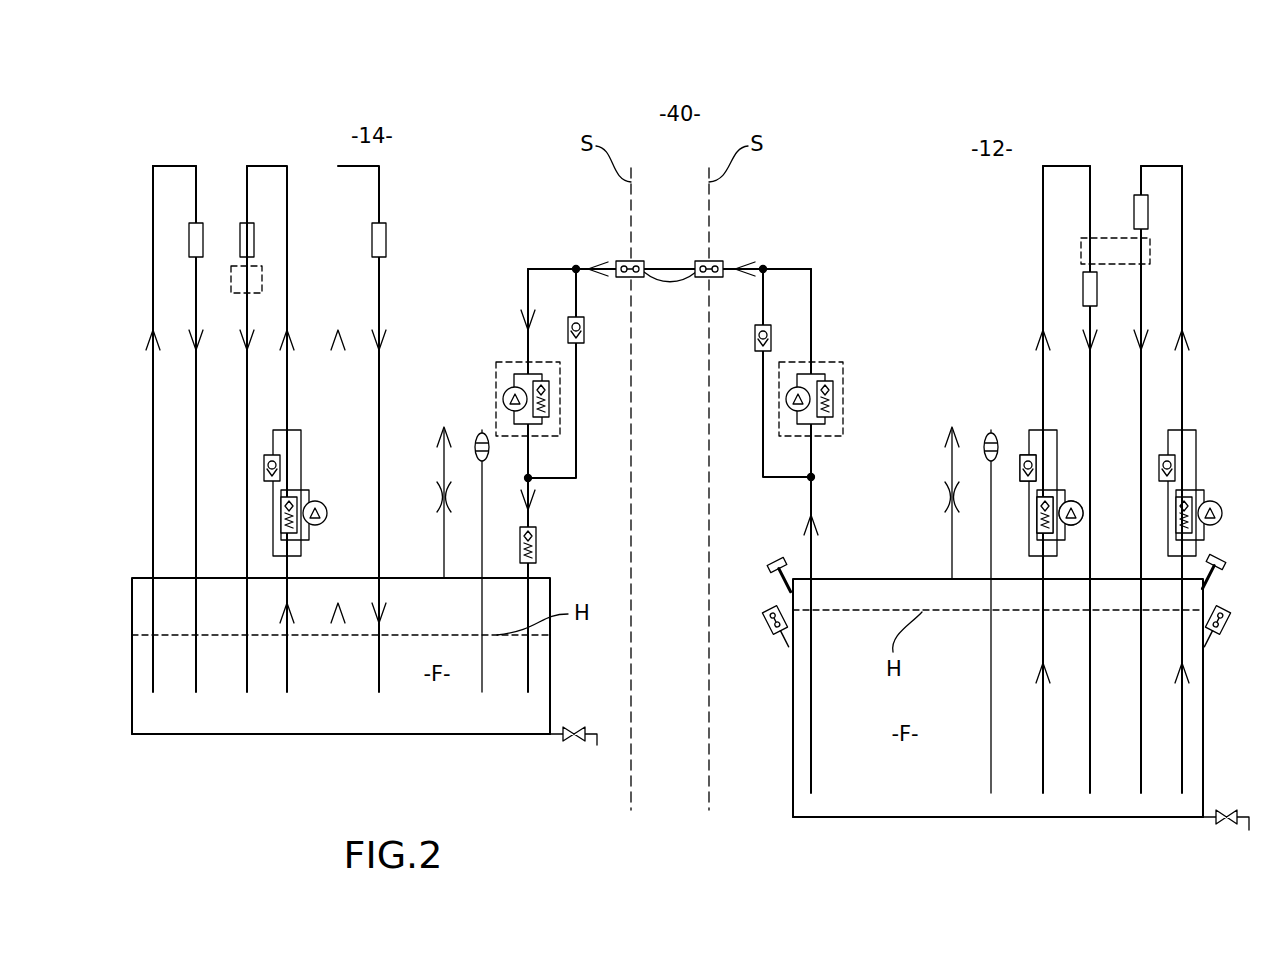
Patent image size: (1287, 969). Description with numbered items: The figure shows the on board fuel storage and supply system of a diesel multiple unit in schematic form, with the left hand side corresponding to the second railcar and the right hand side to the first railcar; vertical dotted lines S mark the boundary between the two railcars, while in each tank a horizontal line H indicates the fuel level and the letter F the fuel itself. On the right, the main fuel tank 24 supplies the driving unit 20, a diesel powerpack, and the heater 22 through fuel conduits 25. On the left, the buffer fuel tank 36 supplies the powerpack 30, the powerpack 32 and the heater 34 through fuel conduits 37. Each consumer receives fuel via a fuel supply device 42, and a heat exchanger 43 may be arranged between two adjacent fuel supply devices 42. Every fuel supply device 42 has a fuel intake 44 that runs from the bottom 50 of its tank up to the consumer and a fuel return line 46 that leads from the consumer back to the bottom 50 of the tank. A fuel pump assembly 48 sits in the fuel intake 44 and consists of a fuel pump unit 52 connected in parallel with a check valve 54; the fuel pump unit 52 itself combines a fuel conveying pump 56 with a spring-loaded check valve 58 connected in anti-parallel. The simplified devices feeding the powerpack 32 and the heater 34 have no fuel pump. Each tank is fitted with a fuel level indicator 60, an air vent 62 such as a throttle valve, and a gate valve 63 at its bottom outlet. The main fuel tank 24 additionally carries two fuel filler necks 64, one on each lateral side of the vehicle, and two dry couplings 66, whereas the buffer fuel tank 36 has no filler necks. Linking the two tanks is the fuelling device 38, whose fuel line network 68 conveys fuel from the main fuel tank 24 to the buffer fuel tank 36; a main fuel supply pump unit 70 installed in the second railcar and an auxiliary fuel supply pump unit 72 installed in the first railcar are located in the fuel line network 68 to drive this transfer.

The driving unit 20 is at (1134, 200).
The heater 22 is at (1083, 282).
The main fuel tank 24 is at (925, 808).
The fuel conduits 25 is at (1015, 228).
The powerpack 30 is at (243, 228).
The powerpack 32 is at (388, 234).
The heater 34 is at (205, 244).
The buffer fuel tank 36 is at (457, 735).
The fuel conduits 37 is at (134, 300).
The fuelling device 38 is at (582, 230).
The fuel supply device 42 is at (153, 198).
The heat exchanger 43 is at (262, 272).
The fuel intake 44 is at (152, 520).
The fuel return line 46 is at (212, 605).
The fuel pump assembly 48 is at (320, 435).
The bottom 50 is at (290, 724).
The fuel pump unit 52 is at (1232, 492).
The check valve 54 is at (1027, 466).
The fuel conveying pump 56 is at (1078, 516).
The spring-loaded check valve 58 is at (1043, 521).
The fuel level indicator 60 is at (480, 433).
The air vent 62 is at (452, 522).
The gate valve 63 is at (572, 742).
The fuel filler necks 64 is at (772, 562).
The dry couplings 66 is at (770, 626).
The fuel line network 68 is at (684, 290).
The main fuel supply pump unit 70 is at (496, 362).
The auxiliary fuel supply pump unit 72 is at (843, 363).